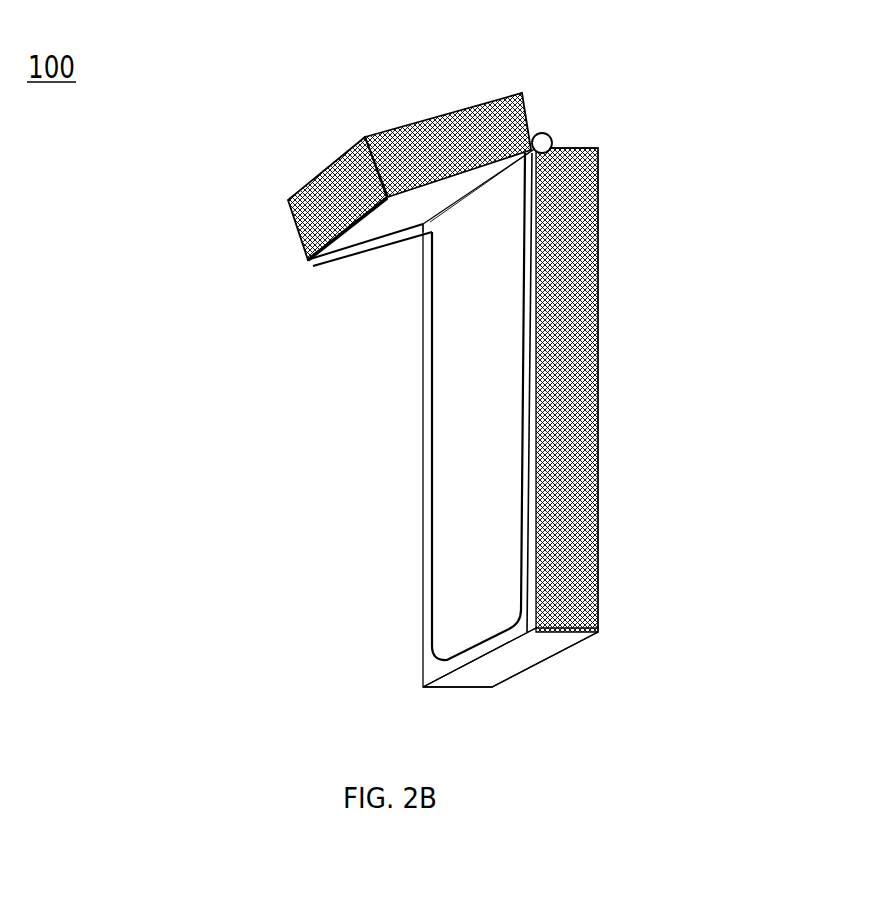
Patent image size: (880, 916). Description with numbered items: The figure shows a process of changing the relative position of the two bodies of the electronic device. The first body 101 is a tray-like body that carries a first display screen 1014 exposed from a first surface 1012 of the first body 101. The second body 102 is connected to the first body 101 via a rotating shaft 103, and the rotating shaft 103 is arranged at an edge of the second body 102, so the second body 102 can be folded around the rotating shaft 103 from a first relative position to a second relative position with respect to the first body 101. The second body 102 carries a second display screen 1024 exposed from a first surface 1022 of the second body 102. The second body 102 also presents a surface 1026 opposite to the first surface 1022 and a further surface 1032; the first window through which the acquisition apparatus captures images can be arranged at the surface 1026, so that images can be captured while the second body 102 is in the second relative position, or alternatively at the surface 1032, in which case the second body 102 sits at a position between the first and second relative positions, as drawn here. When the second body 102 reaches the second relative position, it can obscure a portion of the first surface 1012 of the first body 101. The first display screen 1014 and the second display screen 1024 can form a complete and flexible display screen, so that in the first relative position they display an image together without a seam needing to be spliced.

The first body 101 is at (598, 418).
The second body 102 is at (412, 136).
The rotating shaft 103 is at (551, 133).
The first surface of the first body 1012 is at (440, 667).
The first display screen 1014 is at (450, 537).
The first surface of the second body 1022 is at (308, 262).
The second display screen 1024 is at (397, 222).
The surface opposite to the first surface of the second body 1026 is at (320, 197).
The surface of the second body 1032 is at (435, 112).